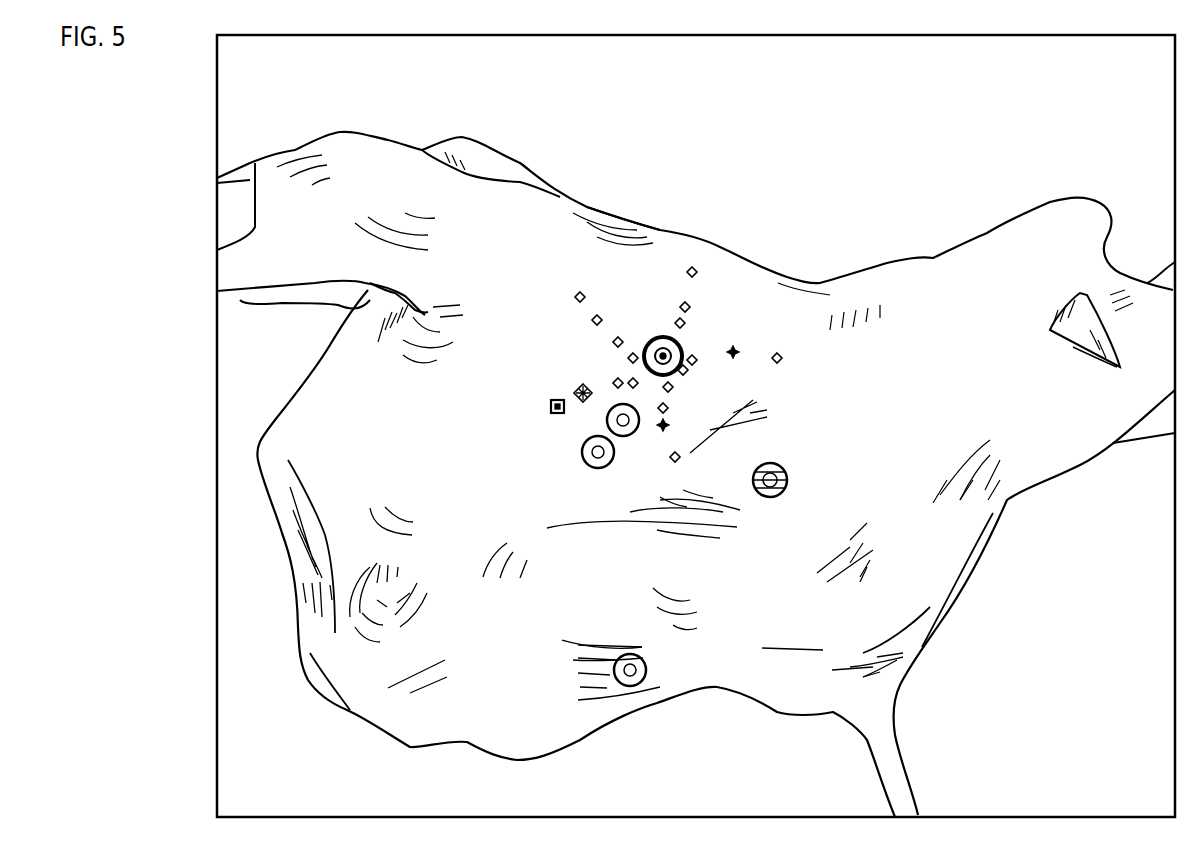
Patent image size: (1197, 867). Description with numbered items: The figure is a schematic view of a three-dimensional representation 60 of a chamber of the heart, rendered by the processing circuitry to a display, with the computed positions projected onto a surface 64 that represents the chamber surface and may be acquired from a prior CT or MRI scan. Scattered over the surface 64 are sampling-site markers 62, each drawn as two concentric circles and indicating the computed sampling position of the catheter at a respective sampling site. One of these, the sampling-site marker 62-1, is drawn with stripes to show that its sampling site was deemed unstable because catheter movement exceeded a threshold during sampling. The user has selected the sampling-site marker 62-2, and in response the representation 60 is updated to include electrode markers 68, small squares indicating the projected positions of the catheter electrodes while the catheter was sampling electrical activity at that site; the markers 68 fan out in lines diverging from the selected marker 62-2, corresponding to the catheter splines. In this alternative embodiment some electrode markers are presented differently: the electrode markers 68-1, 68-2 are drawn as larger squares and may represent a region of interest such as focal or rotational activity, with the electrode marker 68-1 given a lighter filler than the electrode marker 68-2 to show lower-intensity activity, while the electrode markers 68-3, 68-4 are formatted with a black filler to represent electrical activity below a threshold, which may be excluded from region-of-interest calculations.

The three-dimensional representation 60 is at (888, 178).
The surface 64 is at (628, 218).
The electrode markers 68 is at (577, 290).
The electrode marker 68-1 is at (548, 404).
The electrode marker 68-2 is at (570, 388).
The electrode marker 68-3 is at (660, 432).
The electrode marker 68-4 is at (738, 348).
The sampling-site markers 62 is at (606, 421).
The sampling-site marker 62-1 is at (787, 481).
The sampling-site marker 62-2 is at (663, 336).